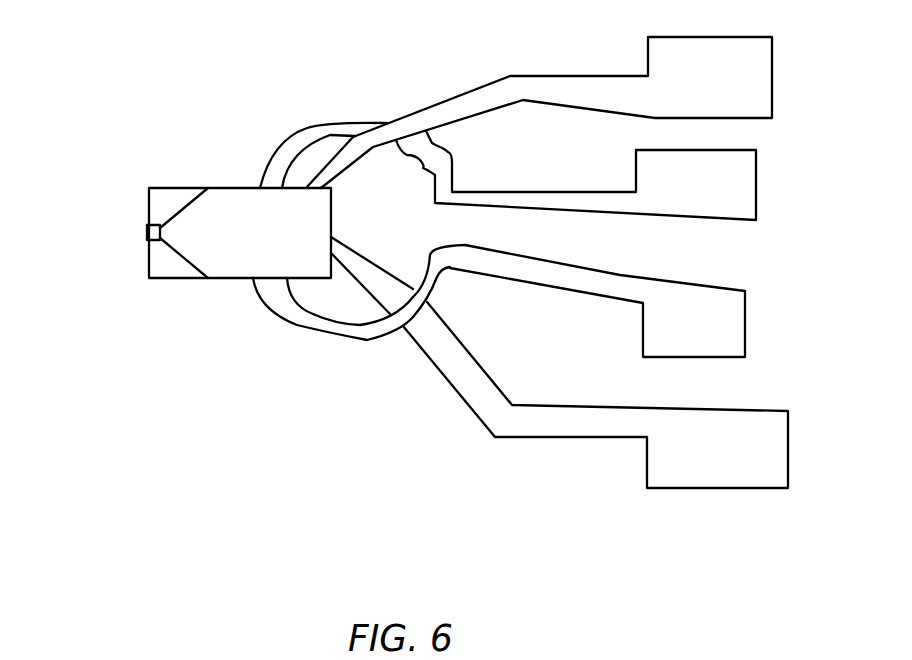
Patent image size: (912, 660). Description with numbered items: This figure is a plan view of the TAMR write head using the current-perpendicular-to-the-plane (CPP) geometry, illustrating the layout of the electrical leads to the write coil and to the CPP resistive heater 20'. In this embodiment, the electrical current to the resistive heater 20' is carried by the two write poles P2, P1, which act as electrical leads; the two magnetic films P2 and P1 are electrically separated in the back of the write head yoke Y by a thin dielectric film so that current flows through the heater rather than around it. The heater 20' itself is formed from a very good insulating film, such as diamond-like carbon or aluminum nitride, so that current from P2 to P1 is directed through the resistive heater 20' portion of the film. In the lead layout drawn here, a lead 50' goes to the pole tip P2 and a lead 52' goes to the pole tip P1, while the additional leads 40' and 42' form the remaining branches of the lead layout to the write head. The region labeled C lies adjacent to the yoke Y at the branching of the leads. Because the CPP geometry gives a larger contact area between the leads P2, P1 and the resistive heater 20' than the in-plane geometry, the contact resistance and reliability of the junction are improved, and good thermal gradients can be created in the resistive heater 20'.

The resistive heater 20' is at (174, 241).
The write pole P2 is at (153, 227).
The write pole P1 is at (167, 258).
The write head yoke Y is at (295, 215).
The lower waveguide branching region C is at (292, 317).
The lead 50' is at (582, 108).
The upper inner arm and contact pad 40' is at (628, 175).
The lower inner arm and contact pad 42' is at (658, 301).
The lead 52' is at (606, 362).